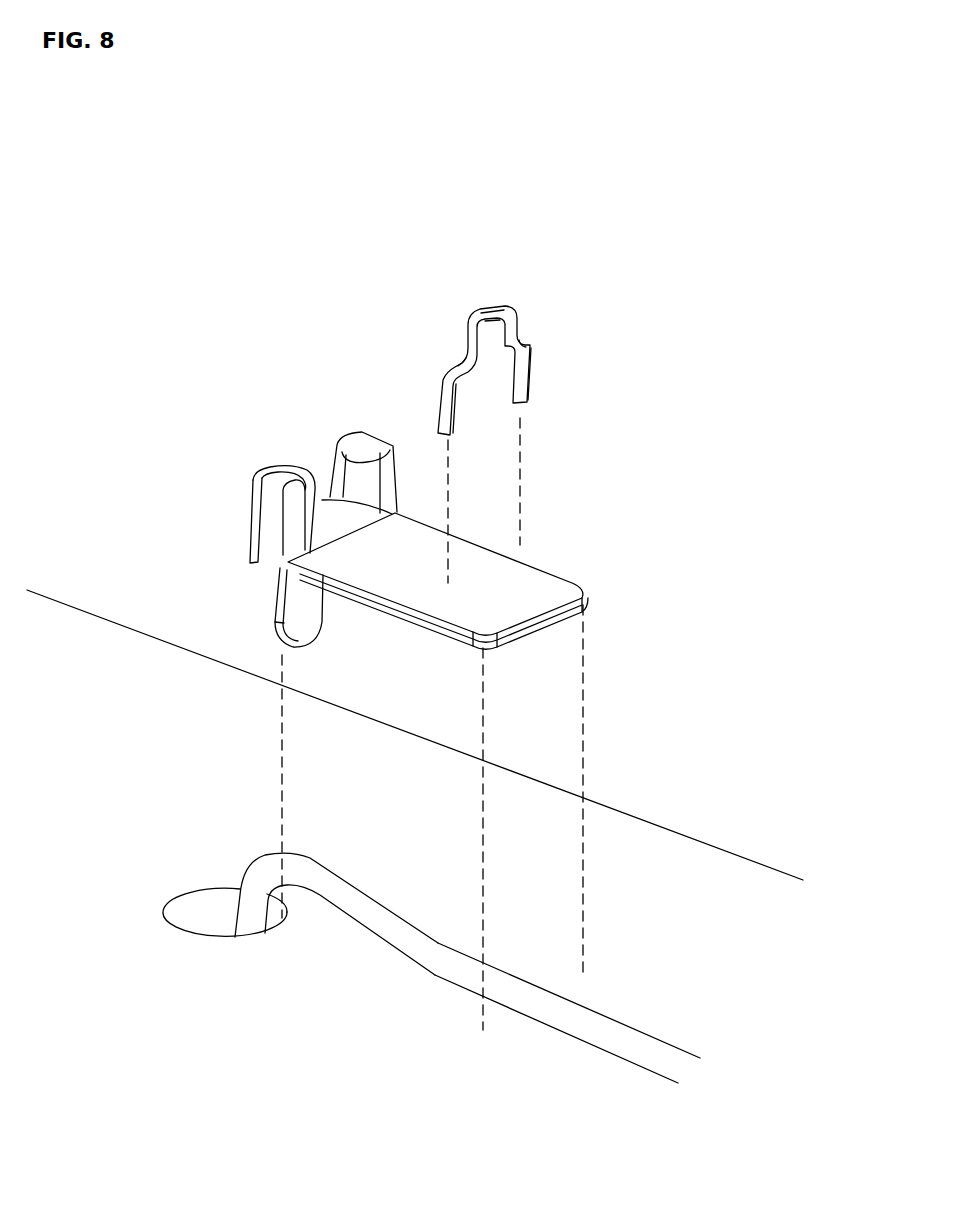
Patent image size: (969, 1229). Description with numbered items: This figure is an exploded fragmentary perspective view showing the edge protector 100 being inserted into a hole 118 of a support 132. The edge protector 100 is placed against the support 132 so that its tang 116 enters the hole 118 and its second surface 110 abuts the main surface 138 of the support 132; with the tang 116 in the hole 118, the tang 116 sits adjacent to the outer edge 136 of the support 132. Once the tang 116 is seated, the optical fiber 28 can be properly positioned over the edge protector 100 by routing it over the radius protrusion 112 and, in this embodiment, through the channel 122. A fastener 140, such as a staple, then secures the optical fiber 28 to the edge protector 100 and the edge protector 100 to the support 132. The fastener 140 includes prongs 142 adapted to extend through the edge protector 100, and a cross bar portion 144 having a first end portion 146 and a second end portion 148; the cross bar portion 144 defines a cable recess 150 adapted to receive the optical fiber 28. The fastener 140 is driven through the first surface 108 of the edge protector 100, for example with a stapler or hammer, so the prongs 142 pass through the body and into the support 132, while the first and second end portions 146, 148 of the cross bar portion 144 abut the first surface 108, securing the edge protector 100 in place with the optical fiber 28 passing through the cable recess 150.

The optical fiber 28 is at (590, 1020).
The edge protector 100 is at (433, 515).
The first surface 108 is at (507, 600).
The second surface 110 is at (383, 620).
The radius protrusion 112 is at (322, 505).
The tang 116 is at (270, 598).
The hole 118 is at (183, 905).
The channel 122 is at (340, 437).
The support 132 is at (113, 657).
The outer edge 136 is at (188, 932).
The main surface 138 is at (420, 812).
The fastener 140 is at (504, 353).
The prongs 142 is at (447, 400).
The cross bar portion 144 is at (493, 312).
The first end portion 146 is at (520, 343).
The second end portion 148 is at (460, 363).
The cable recess 150 is at (490, 338).